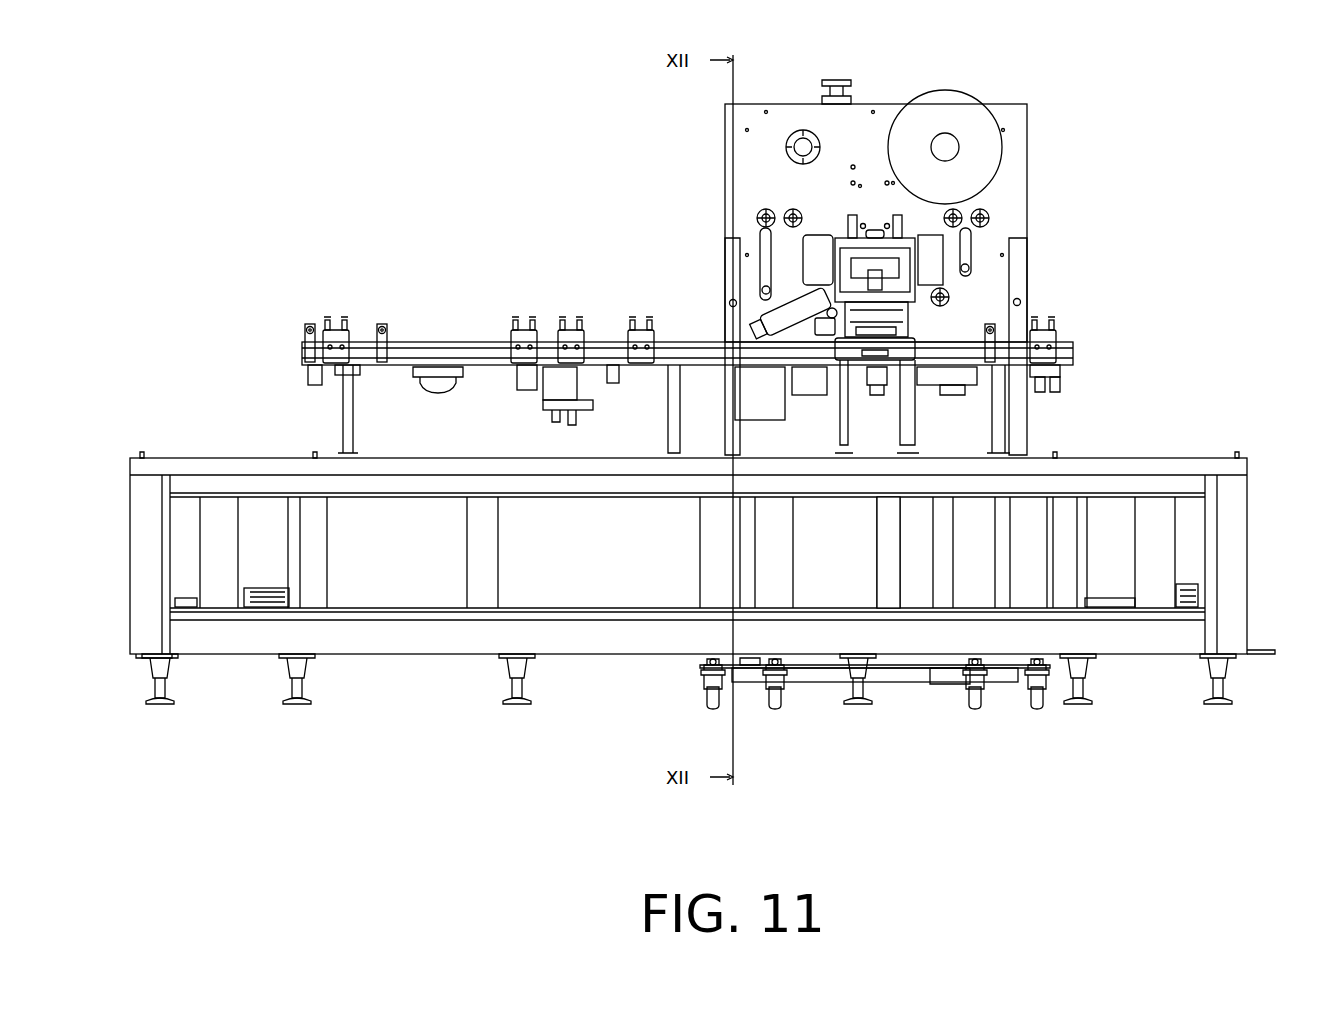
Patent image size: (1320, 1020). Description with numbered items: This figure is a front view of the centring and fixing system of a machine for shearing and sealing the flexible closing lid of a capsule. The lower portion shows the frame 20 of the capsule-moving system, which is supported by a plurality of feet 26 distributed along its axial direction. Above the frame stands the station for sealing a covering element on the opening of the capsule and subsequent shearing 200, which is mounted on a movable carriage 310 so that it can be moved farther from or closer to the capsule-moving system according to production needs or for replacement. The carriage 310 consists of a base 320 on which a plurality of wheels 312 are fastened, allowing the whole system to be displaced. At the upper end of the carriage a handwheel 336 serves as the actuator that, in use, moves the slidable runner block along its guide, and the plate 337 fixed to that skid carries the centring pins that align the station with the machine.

The frame 20 is at (193, 647).
The feet 26 is at (865, 692).
The station for sealing a covering element on the opening of the capsule and subsequ 200 is at (905, 308).
The carriage 310 is at (914, 234).
The wheels 312 is at (1038, 698).
The base 320 is at (817, 678).
The handwheel 336 is at (835, 85).
The plate 337 is at (1020, 198).